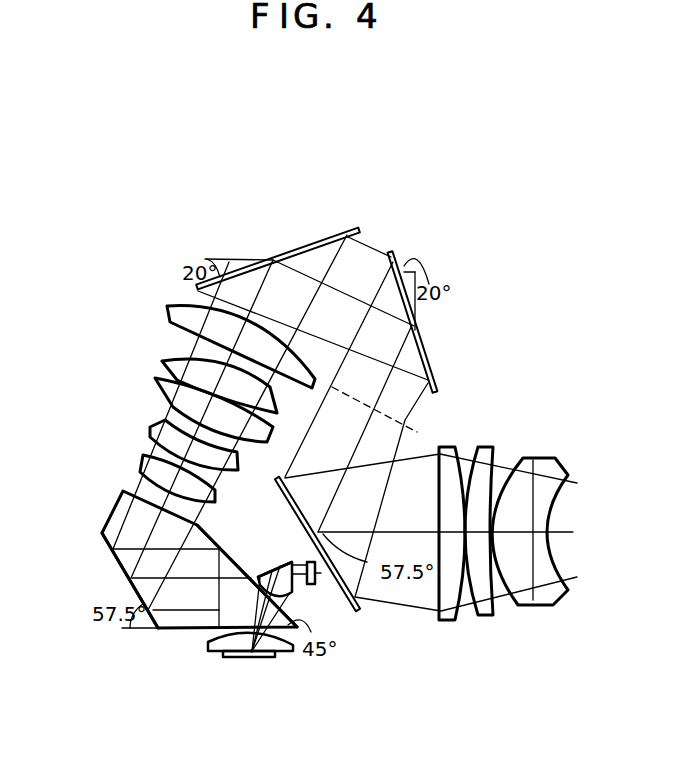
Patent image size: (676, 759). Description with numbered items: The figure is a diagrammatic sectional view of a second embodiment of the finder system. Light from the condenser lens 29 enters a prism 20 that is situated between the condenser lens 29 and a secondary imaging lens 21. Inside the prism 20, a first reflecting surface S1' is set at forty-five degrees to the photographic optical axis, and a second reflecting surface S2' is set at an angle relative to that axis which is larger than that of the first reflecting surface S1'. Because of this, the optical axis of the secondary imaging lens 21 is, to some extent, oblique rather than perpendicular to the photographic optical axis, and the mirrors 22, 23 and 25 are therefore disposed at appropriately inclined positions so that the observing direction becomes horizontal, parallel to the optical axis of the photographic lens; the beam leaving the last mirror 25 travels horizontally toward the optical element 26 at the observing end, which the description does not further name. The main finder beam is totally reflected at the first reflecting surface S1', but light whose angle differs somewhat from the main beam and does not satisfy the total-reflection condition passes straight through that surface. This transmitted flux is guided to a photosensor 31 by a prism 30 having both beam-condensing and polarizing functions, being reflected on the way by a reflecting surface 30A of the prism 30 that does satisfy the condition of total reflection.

The prism 20 is at (125, 517).
The secondary imaging lens 21 is at (148, 377).
The mirror 22 is at (307, 240).
The mirror 23 is at (401, 258).
The mirror 25 is at (340, 618).
The projection lens 26 is at (493, 447).
The condenser lens 29 is at (205, 642).
The prism 30 is at (263, 576).
The reflecting surface 30A is at (262, 576).
The photosensor 31 is at (316, 586).
The first reflecting surface S1' is at (247, 552).
The second reflecting surface S2' is at (102, 578).